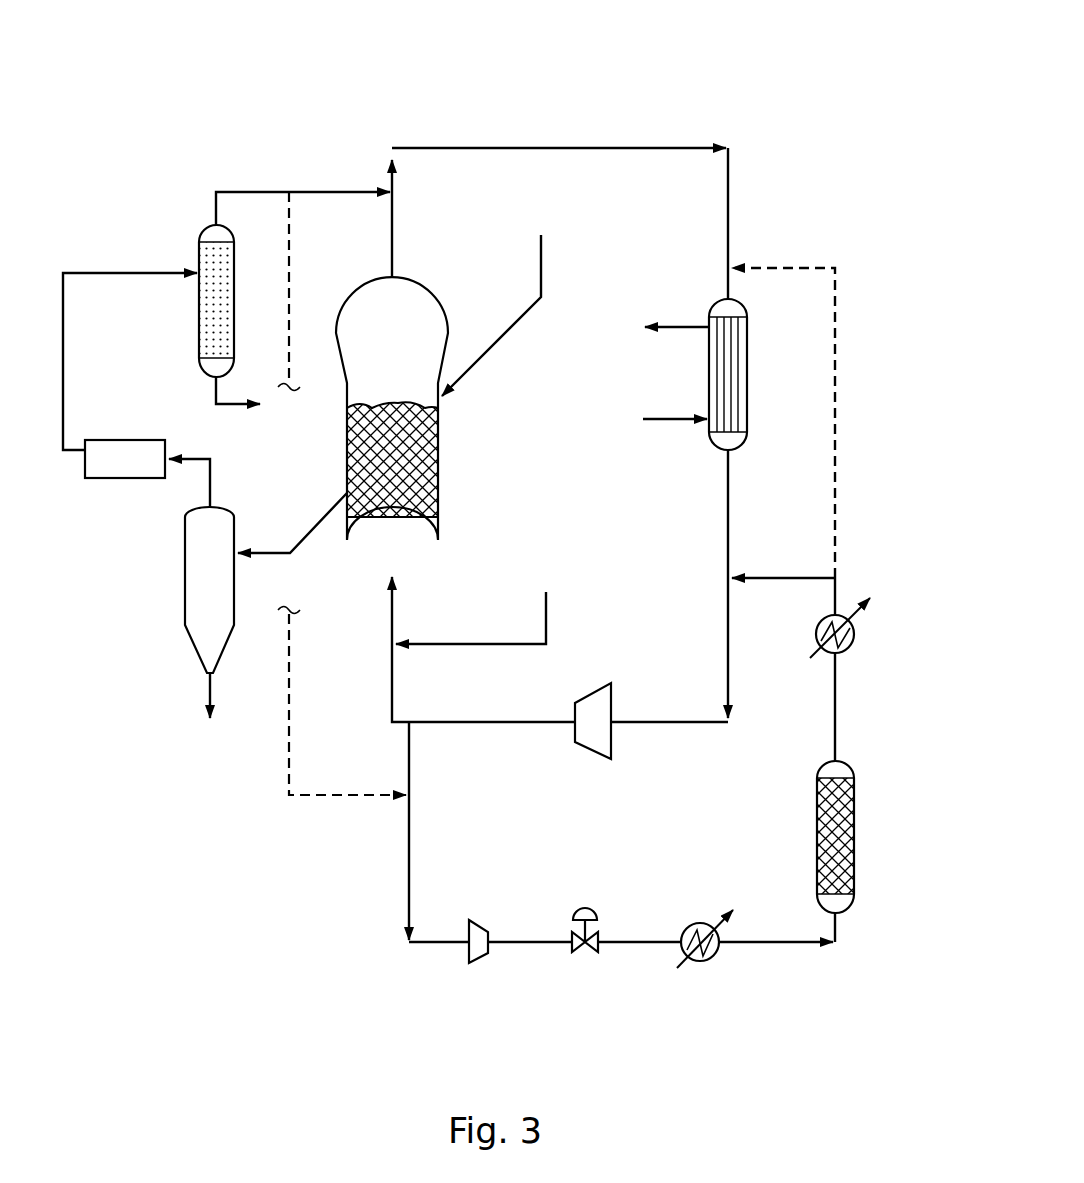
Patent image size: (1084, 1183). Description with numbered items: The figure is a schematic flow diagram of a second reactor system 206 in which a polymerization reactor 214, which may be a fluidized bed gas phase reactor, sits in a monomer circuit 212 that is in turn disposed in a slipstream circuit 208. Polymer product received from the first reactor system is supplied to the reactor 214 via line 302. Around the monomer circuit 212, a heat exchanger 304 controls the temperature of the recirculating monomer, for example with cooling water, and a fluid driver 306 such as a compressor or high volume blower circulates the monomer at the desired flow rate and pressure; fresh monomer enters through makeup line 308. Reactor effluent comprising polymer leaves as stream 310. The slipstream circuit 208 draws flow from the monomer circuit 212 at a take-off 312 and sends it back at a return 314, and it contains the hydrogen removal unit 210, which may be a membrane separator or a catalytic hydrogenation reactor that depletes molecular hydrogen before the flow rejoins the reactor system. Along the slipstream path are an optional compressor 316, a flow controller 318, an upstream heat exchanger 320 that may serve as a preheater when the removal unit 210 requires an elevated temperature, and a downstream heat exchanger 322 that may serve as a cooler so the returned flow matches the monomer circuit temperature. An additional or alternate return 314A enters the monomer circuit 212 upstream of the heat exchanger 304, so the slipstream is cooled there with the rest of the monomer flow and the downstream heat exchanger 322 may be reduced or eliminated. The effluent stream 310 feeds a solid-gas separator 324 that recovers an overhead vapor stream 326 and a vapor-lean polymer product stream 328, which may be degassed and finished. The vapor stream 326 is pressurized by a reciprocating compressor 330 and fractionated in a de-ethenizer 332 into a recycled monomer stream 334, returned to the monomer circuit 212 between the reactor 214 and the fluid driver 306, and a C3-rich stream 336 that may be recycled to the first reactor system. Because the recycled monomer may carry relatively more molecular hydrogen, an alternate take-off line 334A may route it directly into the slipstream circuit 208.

The second reactor system 206 is at (457, 68).
The slipstream circuit 208 is at (790, 942).
The hydrogen removal unit 210 is at (855, 842).
The monomer circuit 212 is at (620, 148).
The polymerization reactor 214 is at (438, 482).
The line 302 is at (541, 268).
The heat exchanger 304 is at (747, 378).
The fluid driver 306 is at (600, 758).
The makeup line 308 is at (546, 612).
The reactor effluent stream 310 is at (275, 553).
The take-off 312 is at (409, 868).
The return 314 is at (770, 578).
The alternate return 314A is at (810, 268).
The compressor 316 is at (478, 963).
The flow controller 318 is at (590, 906).
The upstream heat exchanger 320 is at (700, 963).
The downstream heat exchanger 322 is at (855, 640).
The solid-gas separator 324 is at (185, 605).
The vapor stream 326 is at (210, 480).
The vapor-lean polymer product stream 328 is at (210, 693).
The reciprocating compressor 330 is at (135, 478).
The de-ethenizer 332 is at (199, 330).
The recycled monomer stream 334 is at (243, 192).
The alternate take-off line 334A is at (289, 793).
The C3-rich stream 336 is at (216, 395).